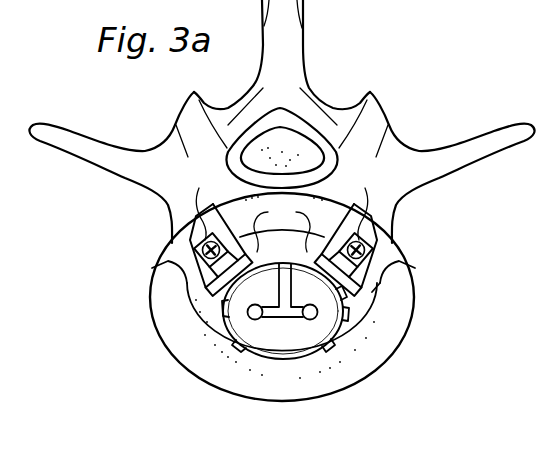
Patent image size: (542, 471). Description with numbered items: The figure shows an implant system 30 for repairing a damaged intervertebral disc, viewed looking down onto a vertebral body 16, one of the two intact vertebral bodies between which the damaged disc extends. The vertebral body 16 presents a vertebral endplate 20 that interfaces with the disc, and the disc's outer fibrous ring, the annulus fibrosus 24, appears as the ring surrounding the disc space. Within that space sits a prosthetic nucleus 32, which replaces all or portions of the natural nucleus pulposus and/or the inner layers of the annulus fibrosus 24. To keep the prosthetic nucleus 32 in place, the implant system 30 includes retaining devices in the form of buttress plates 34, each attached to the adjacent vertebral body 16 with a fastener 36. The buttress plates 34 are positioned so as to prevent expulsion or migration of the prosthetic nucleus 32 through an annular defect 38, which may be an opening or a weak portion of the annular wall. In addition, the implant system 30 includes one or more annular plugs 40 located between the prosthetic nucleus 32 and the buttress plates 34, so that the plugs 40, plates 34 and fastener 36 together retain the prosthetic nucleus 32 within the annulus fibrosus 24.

The vertebral body 16 is at (150, 302).
The vertebral endplate 20 is at (400, 247).
The annulus fibrosus 24 is at (381, 352).
The implant system 30 is at (172, 392).
The prosthetic nucleus 32 is at (293, 345).
The buttress plate 34 is at (147, 162).
The fastener 36 is at (152, 268).
The annular defect 38 is at (386, 274).
The annular plug 40 is at (282, 225).